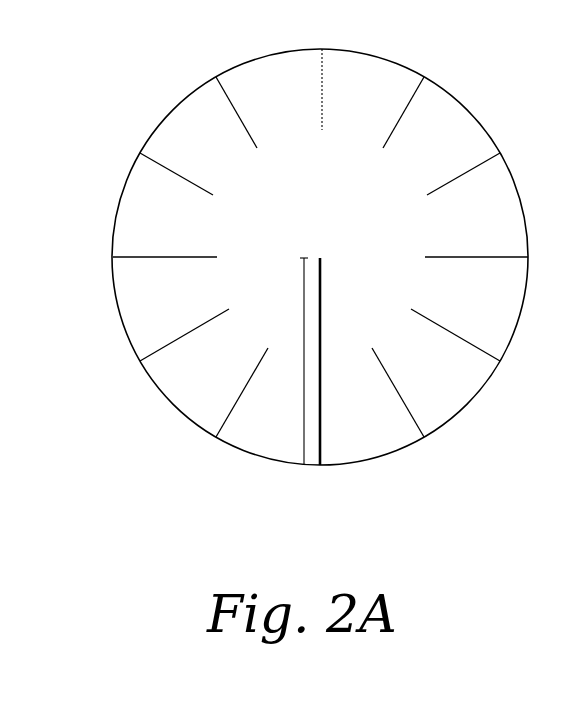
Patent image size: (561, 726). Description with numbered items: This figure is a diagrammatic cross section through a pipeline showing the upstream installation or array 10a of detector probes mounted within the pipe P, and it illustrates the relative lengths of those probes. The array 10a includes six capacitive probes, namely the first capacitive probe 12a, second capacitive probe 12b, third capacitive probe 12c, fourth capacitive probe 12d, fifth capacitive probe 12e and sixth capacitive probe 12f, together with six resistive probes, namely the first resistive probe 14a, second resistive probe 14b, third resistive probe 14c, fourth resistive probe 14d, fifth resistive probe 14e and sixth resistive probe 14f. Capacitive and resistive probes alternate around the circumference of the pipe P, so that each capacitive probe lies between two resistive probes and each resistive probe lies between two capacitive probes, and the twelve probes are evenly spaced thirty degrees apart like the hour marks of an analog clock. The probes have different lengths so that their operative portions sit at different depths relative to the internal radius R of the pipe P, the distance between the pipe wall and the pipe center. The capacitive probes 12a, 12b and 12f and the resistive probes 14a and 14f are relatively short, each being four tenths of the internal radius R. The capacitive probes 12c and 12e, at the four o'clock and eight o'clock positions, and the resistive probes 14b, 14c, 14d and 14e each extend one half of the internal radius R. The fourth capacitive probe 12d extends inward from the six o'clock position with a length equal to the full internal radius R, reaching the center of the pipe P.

The upstream installation or array 10a is at (166, 449).
The pipe P is at (186, 100).
The internal radius R is at (304, 327).
The first capacitive probe 12a is at (322, 95).
The second capacitive probe 12b is at (467, 174).
The third capacitive probe 12c is at (472, 310).
The fourth capacitive probe 12d is at (321, 307).
The fifth capacitive probe 12e is at (195, 330).
The sixth capacitive probe 12f is at (200, 161).
The first resistive probe 14a is at (400, 118).
The second resistive probe 14b is at (480, 257).
The third resistive probe 14c is at (400, 397).
The fourth resistive probe 14d is at (254, 365).
The fifth resistive probe 14e is at (152, 257).
The sixth resistive probe 14f is at (252, 137).